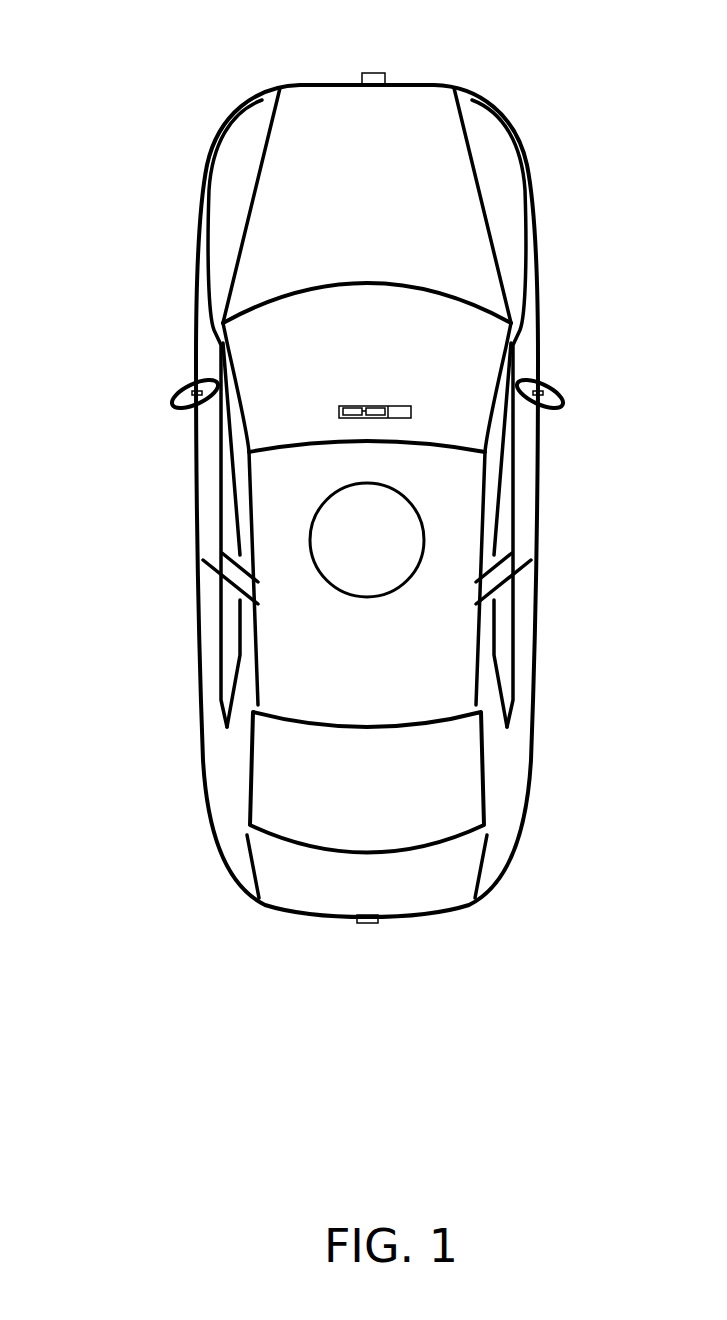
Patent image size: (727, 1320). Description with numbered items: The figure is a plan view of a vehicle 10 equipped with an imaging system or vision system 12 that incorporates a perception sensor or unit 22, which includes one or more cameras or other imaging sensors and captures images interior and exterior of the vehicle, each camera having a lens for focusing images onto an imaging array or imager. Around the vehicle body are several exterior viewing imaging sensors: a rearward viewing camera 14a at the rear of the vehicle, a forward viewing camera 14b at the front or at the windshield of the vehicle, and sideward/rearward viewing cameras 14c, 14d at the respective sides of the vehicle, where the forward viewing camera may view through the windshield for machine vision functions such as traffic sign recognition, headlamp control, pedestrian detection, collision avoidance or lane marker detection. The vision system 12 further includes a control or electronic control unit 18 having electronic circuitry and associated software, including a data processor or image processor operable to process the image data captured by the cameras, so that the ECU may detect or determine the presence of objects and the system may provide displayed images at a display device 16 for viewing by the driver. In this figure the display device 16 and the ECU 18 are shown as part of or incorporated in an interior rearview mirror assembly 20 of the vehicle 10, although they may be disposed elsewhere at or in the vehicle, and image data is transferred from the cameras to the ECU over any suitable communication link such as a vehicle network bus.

The vehicle 10 is at (333, 505).
The vision system 12 is at (176, 602).
The rearward viewing camera 14a is at (370, 922).
The forward viewing camera 14b is at (378, 72).
The sideward/rearward viewing camera 14c is at (183, 386).
The sideward/rearward viewing camera 14d is at (552, 385).
The display device 16 is at (353, 407).
The electronic control unit 18 is at (372, 407).
The interior rearview mirror assembly 20 is at (412, 407).
The perception sensor 22 is at (370, 597).